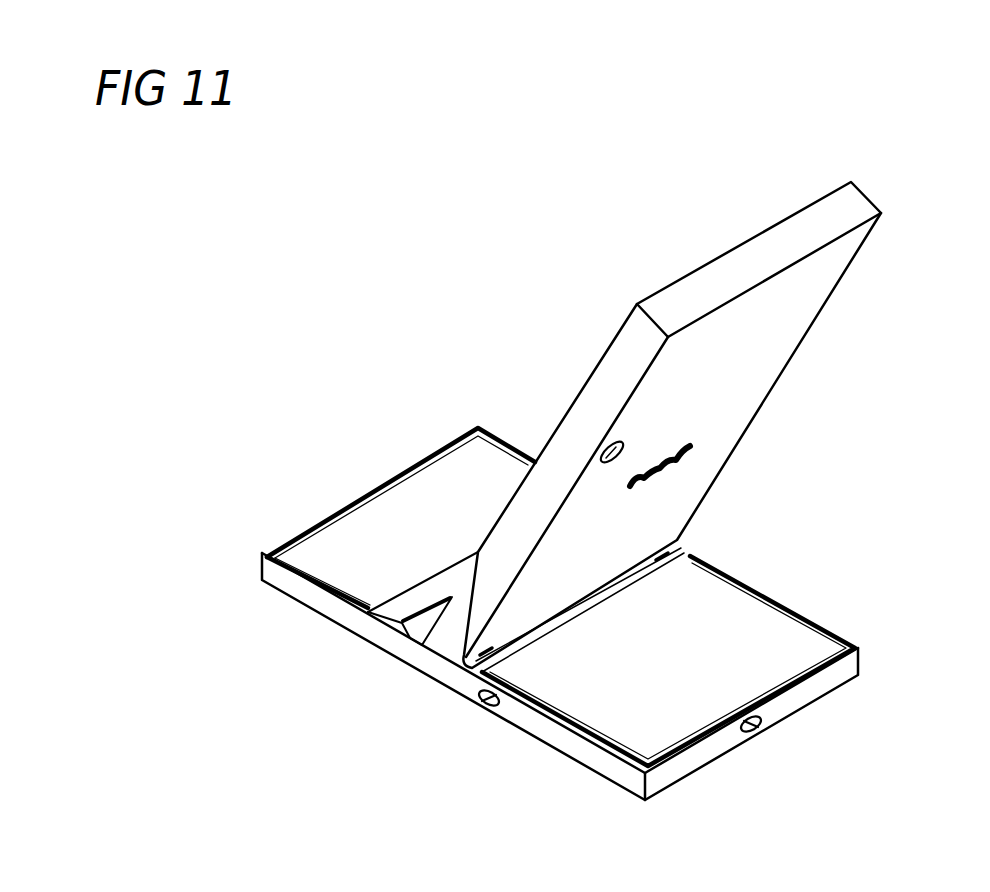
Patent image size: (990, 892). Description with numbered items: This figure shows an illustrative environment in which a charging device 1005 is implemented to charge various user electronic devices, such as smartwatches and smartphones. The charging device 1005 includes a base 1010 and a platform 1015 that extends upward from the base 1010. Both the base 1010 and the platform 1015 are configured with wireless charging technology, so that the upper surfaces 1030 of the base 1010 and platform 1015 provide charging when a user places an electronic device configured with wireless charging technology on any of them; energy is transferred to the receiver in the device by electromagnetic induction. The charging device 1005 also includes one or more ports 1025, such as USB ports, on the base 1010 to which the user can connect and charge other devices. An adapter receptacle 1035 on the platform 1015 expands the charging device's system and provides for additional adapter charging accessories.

The charging device 1005 is at (878, 161).
The base 1010 is at (859, 650).
The platform 1015 is at (815, 318).
The ports 1025 is at (486, 705).
The upper surfaces 1030 is at (365, 533).
The adapter receptacle 1035 is at (602, 455).